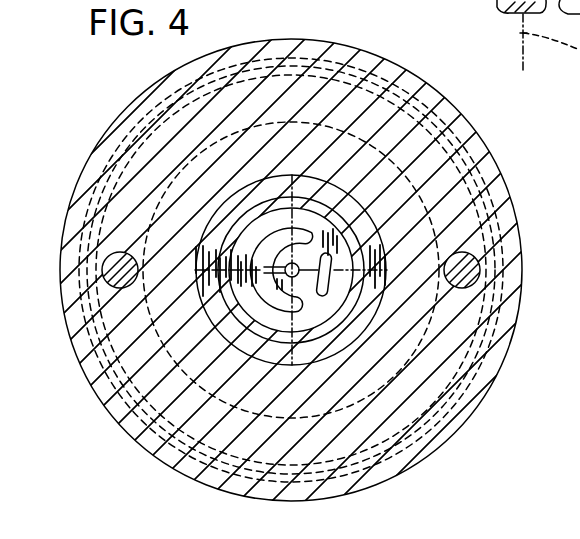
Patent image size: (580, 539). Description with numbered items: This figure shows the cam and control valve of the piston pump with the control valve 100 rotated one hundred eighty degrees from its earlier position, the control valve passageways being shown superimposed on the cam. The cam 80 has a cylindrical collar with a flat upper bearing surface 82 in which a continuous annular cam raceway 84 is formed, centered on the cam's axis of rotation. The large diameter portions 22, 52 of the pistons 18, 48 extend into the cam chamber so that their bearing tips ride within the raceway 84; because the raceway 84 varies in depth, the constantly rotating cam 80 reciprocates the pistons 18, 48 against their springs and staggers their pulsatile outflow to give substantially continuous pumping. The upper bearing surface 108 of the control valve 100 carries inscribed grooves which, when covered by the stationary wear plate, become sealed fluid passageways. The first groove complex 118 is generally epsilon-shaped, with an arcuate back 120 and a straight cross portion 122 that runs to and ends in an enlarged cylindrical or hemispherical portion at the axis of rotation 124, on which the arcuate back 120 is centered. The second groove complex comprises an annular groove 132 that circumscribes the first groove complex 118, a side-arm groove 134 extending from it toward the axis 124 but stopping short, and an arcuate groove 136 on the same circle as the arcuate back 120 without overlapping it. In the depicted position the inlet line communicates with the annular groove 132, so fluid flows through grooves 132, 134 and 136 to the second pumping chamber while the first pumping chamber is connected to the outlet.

The piston 18 is at (94, 257).
The large diameter portion 22 is at (80, 312).
The piston 48 is at (492, 278).
The large diameter portion 52 is at (448, 252).
The cam 80 is at (92, 199).
The flat upper bearing surface 82 is at (387, 70).
The cam raceway 84 is at (248, 68).
The control valve 100 is at (240, 193).
The bearing surface 108 is at (313, 224).
The first groove complex 118 is at (248, 296).
The arcuate back 120 is at (255, 318).
The straight cross portion 122 is at (286, 266).
The axis of rotation 124 is at (298, 277).
The annular groove 132 is at (373, 223).
The side-arm groove 134 is at (320, 296).
The arcuate groove 136 is at (367, 313).